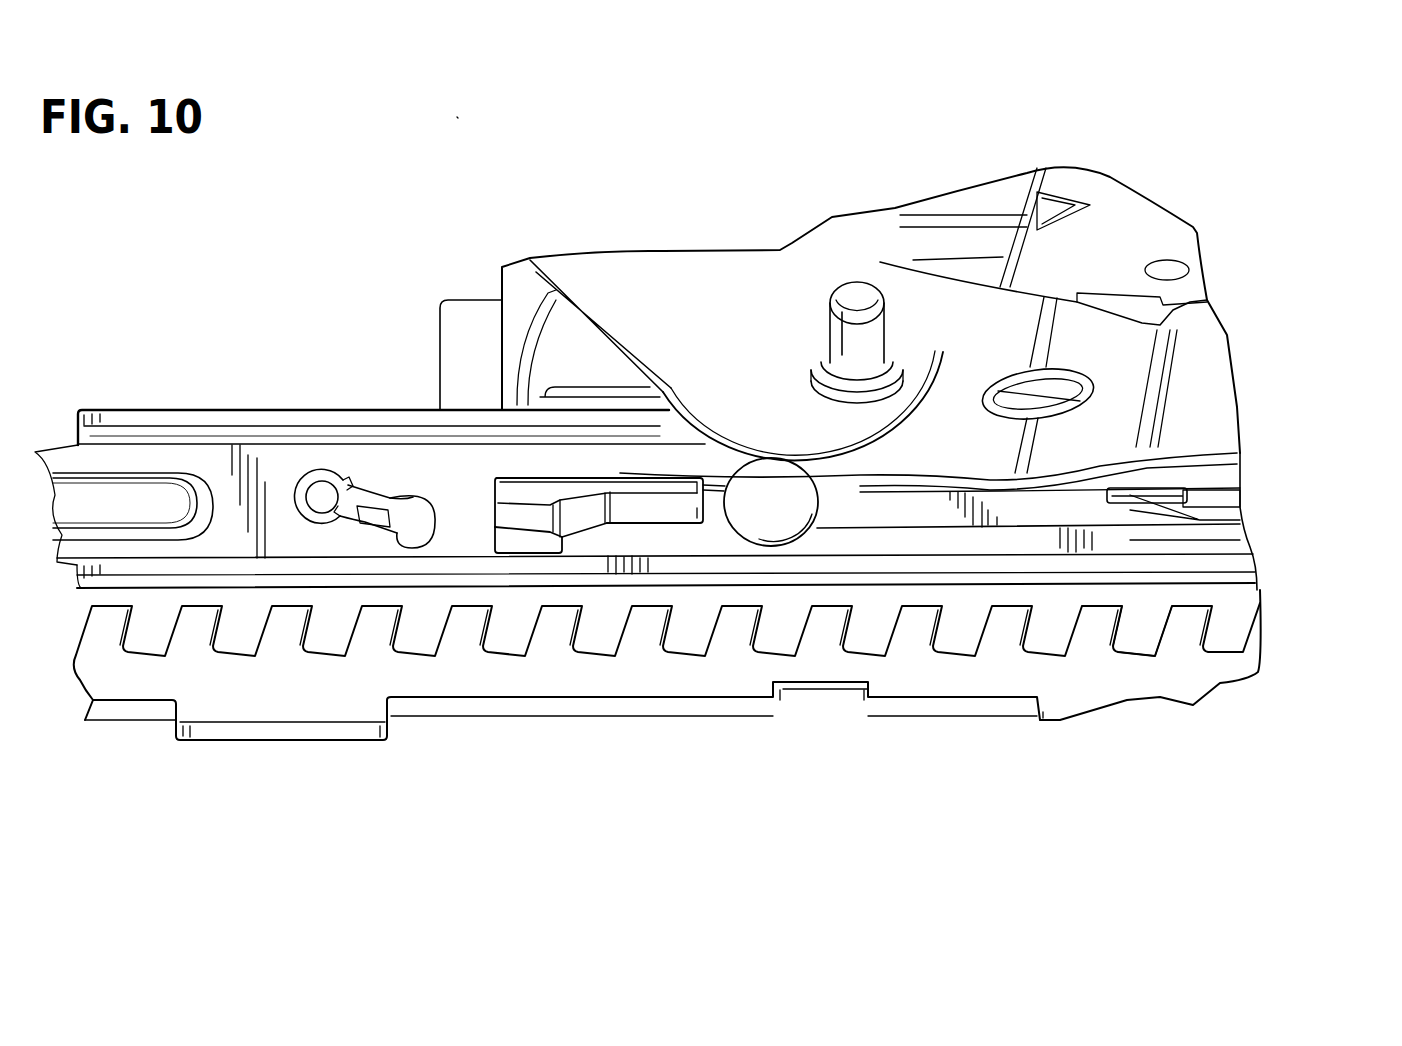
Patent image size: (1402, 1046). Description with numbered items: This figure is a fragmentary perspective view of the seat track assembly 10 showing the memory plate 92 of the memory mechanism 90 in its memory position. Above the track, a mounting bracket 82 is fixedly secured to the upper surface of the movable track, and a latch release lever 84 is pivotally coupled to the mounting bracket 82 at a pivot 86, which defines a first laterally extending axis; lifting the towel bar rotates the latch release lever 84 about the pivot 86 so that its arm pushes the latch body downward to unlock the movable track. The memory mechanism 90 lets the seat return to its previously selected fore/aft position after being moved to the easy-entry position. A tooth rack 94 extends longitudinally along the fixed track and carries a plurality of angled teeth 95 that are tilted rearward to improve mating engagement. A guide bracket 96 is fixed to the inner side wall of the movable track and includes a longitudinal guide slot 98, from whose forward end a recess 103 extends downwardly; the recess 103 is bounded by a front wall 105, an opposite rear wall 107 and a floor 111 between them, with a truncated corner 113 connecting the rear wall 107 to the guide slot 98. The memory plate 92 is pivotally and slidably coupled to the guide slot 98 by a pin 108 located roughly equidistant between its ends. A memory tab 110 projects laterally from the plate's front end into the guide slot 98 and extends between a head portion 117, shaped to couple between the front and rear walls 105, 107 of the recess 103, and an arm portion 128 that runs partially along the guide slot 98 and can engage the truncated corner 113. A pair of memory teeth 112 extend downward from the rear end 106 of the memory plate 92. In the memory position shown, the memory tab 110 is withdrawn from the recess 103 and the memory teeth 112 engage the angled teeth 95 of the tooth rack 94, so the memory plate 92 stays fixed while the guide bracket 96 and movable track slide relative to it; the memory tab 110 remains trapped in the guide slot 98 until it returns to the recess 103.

The seat track assembly 10 is at (448, 105).
The mounting bracket 82 is at (860, 250).
The latch release lever 84 is at (1198, 353).
The pivot 86 is at (922, 322).
The memory mechanism 90 is at (322, 790).
The memory plate 92 is at (1195, 497).
The tooth rack 94 is at (988, 728).
The angled teeth 95 is at (1093, 640).
The guide bracket 96 is at (237, 392).
The guide slot 98 is at (1152, 530).
The recess 103 is at (553, 566).
The front wall 105 is at (490, 538).
The rear end 106 is at (1200, 520).
The rear wall 107 is at (563, 543).
The pin 108 is at (790, 523).
The memory tab 110 is at (547, 445).
The floor 111 is at (518, 557).
The memory teeth 112 is at (1143, 623).
The truncated corner 113 is at (607, 530).
The head portion 117 is at (523, 488).
The arm portion 128 is at (578, 488).